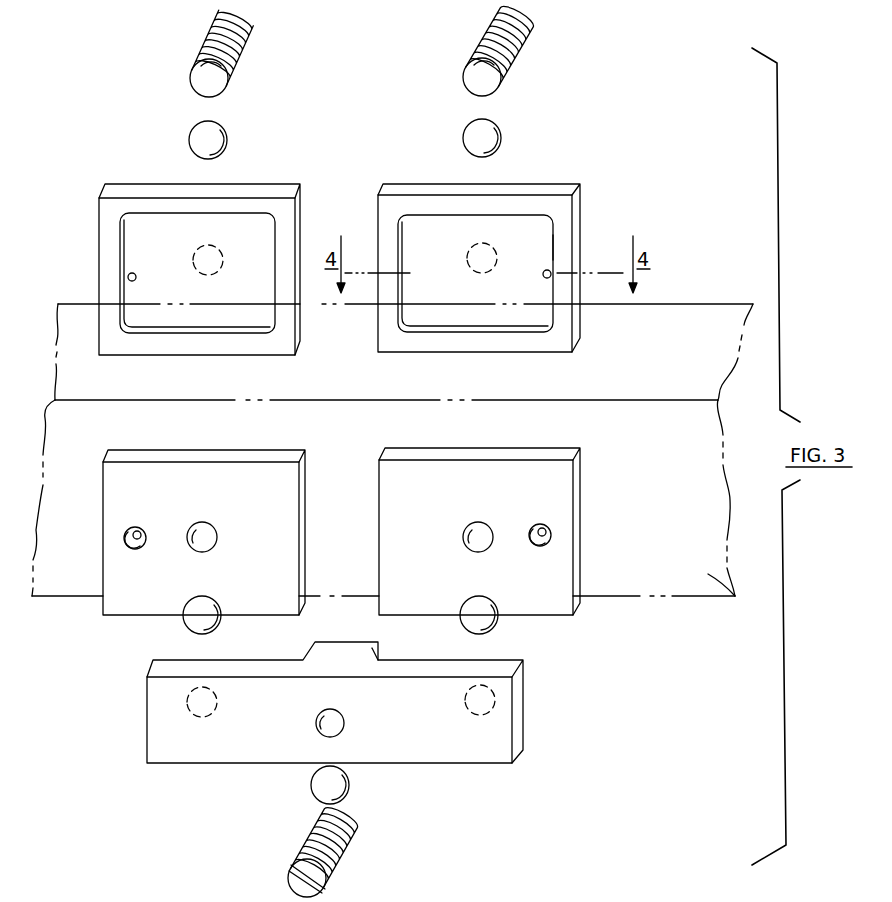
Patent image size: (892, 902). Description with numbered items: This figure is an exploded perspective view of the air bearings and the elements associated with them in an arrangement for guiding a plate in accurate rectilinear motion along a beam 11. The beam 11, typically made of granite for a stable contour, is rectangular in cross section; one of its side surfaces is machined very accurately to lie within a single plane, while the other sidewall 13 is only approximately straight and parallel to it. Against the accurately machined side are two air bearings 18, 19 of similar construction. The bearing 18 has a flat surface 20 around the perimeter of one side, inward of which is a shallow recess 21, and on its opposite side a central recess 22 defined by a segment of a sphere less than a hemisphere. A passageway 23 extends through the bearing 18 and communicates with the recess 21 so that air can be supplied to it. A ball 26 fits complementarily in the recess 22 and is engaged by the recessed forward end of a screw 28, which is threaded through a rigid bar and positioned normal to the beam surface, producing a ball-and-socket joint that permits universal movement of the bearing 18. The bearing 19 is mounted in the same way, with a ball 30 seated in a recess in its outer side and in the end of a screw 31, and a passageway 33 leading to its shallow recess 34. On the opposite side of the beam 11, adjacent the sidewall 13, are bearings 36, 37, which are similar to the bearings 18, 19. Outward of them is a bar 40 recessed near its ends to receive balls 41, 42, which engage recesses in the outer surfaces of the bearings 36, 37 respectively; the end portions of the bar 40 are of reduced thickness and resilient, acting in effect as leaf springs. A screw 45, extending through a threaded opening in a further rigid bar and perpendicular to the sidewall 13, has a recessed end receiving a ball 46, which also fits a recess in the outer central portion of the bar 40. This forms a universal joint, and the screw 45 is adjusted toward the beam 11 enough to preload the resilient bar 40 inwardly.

The beam 11 is at (690, 597).
The sidewall 13 is at (735, 597).
The air bearing 18 is at (500, 252).
The air bearing 19 is at (190, 256).
The flat surface 20 is at (560, 255).
The shallow recess 21 is at (545, 248).
The central recess 22 is at (488, 244).
The passageway 23 is at (550, 278).
The ball 26 is at (500, 132).
The screw 28 is at (505, 80).
The ball 30 is at (226, 134).
The screw 31 is at (228, 70).
The passageway 33 is at (128, 277).
The shallow recess 34 is at (258, 255).
The air bearing 36 is at (582, 568).
The air bearing 37 is at (125, 618).
The resilient bar 40 is at (524, 720).
The ball 41 is at (502, 622).
The ball 42 is at (220, 623).
The screw 45 is at (350, 845).
The ball 46 is at (352, 782).